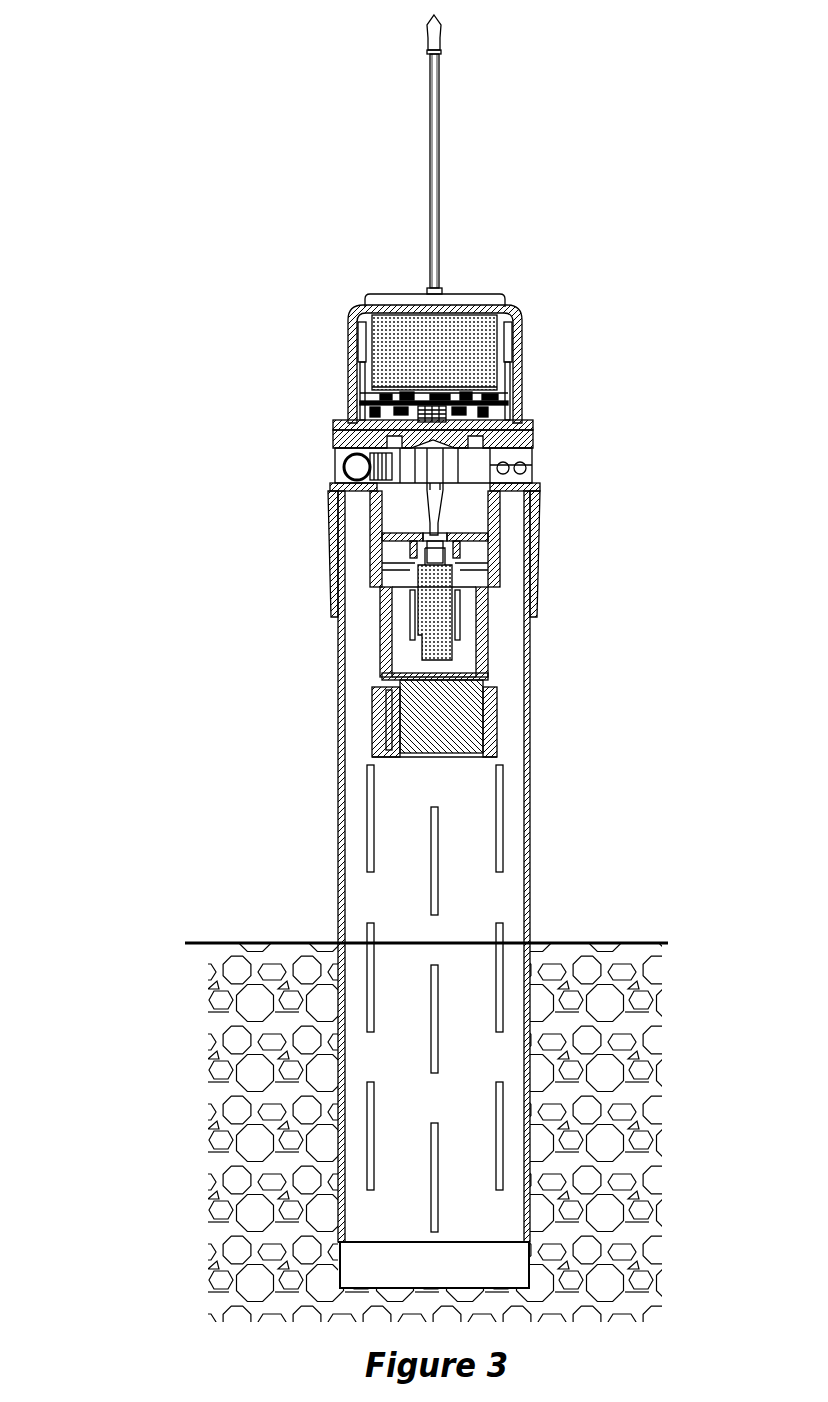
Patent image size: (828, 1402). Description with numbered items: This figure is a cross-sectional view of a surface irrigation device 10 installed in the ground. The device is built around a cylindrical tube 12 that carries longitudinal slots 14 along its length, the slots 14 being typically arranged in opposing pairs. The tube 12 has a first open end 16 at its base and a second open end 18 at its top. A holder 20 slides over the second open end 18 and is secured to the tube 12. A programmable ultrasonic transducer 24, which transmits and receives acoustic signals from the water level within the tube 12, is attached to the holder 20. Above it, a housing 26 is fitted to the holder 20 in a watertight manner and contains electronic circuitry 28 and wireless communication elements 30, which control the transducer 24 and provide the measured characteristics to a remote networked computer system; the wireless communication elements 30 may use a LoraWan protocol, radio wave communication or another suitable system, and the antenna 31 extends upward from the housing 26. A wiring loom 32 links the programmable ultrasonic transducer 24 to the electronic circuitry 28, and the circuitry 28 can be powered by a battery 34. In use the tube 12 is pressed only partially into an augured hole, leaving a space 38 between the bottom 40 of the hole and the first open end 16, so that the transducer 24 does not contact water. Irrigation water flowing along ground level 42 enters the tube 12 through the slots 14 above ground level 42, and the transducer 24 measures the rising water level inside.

The surface irrigation device 10 is at (130, 96).
The cylindrical tube 12 is at (528, 661).
The longitudinal slots 14 is at (500, 797).
The first open end 16 is at (500, 1242).
The second open end 18 is at (530, 500).
The holder 20 is at (540, 553).
The programmable ultrasonic transducer 24 is at (463, 713).
The housing 26 is at (470, 294).
The electronic circuitry 28 is at (468, 404).
The wireless communication elements 30 is at (464, 171).
The antenna rod 31 is at (435, 217).
The wiring loom 32 is at (357, 467).
The battery 34 is at (460, 340).
The base plate 38 is at (387, 1267).
The bottom of hole 40 is at (500, 1290).
The ground level 42 is at (610, 941).